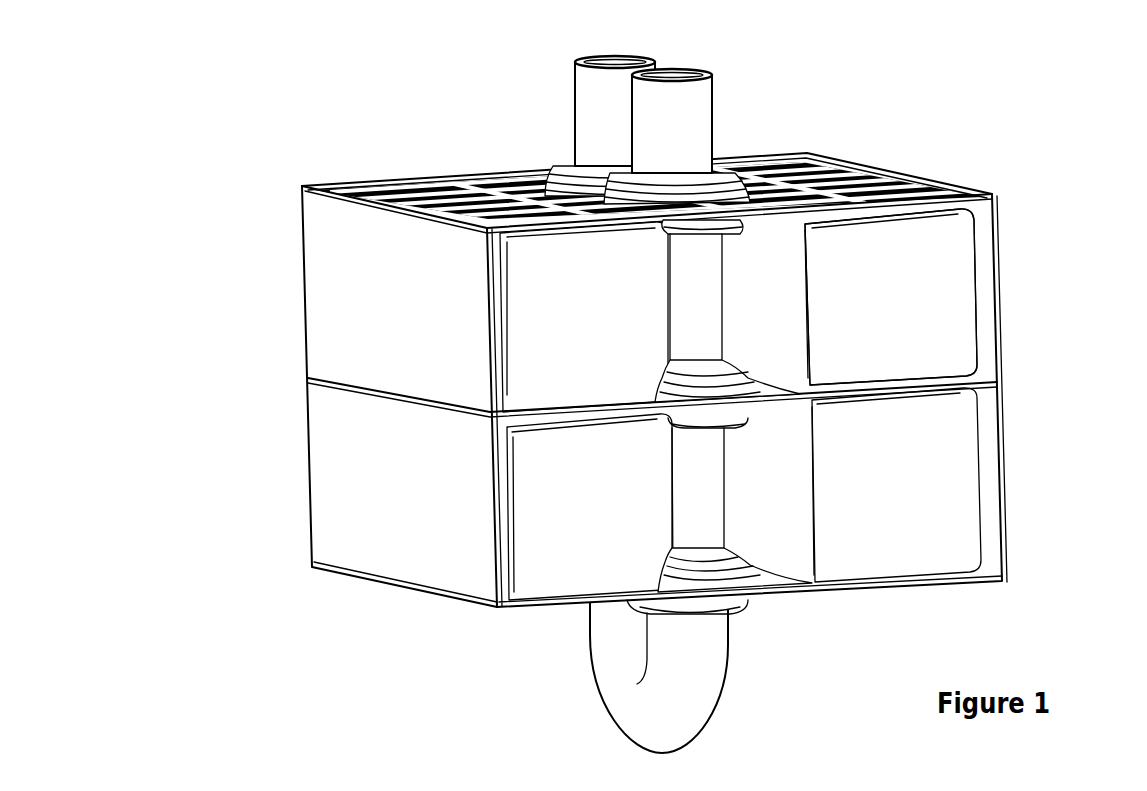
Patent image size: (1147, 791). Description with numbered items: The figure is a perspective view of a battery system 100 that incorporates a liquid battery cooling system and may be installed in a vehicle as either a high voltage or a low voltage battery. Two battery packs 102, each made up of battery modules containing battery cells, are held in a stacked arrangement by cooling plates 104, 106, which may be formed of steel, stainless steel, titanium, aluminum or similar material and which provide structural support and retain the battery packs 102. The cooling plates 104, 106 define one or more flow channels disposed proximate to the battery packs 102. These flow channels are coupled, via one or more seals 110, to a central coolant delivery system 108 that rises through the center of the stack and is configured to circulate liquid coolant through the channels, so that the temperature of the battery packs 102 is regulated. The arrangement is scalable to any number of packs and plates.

The battery system 100 is at (667, 397).
The battery pack 102 is at (923, 298).
The cooling plate 104 is at (308, 380).
The cooling plate 106 is at (302, 186).
The central coolant delivery system 108 is at (715, 103).
The seal 110 is at (558, 167).